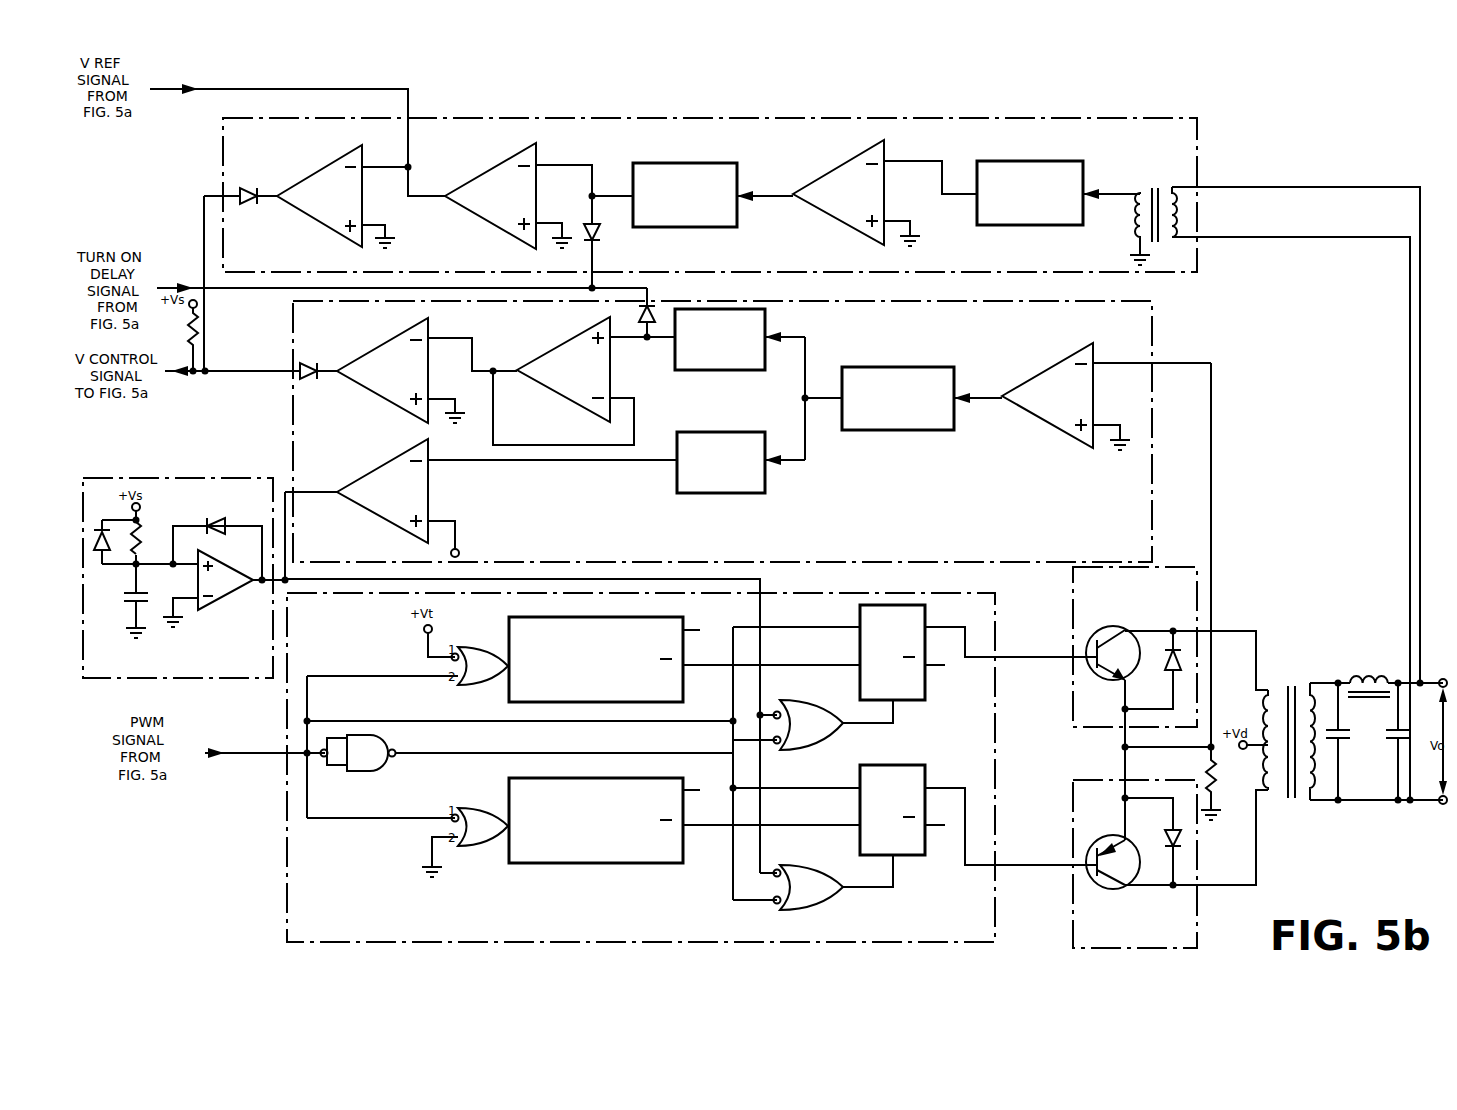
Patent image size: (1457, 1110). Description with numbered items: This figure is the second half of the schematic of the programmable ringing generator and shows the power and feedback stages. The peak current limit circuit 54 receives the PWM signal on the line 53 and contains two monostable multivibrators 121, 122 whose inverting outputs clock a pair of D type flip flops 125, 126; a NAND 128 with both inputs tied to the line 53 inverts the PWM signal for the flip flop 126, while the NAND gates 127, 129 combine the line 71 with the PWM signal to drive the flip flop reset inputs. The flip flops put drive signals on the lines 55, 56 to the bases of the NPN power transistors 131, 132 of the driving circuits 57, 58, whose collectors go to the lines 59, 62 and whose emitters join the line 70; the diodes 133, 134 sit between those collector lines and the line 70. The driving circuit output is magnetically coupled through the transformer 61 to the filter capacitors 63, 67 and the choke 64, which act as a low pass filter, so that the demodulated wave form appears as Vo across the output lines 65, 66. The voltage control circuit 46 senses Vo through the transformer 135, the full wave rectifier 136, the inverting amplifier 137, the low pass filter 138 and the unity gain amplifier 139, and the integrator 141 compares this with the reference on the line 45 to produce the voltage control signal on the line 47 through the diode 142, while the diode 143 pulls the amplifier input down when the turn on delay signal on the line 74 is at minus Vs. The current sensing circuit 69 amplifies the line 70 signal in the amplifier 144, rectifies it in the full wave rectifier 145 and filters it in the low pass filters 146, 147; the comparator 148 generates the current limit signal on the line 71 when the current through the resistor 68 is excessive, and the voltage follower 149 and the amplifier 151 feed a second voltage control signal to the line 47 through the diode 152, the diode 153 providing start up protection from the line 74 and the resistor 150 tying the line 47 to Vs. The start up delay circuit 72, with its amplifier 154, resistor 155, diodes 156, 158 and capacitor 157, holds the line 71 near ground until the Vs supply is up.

The line 45 is at (285, 89).
The voltage control circuit 46 is at (748, 118).
The line 47 is at (222, 375).
The line 53 is at (210, 756).
The peak current limit circuit 54 is at (285, 870).
The line 55 is at (1048, 657).
The line 56 is at (1035, 870).
The driving circuit 57 is at (1072, 614).
The driving circuit 58 is at (1072, 936).
The line 59 is at (1238, 631).
The transformer 61 is at (1298, 680).
The line 62 is at (1240, 886).
The filter capacitor 63 is at (1343, 740).
The choke 64 is at (1362, 678).
The output line 65 is at (1330, 187).
The output line 66 is at (1318, 237).
The filter capacitor 67 is at (1395, 742).
The resistor 68 is at (1225, 800).
The current sensing circuit 69 is at (1156, 334).
The line 70 is at (1213, 492).
The line 71 is at (748, 578).
The start up delay circuit 72 is at (183, 478).
The line 74 is at (212, 300).
The monostable multivibrator 121 is at (523, 625).
The monostable multivibrator 122 is at (535, 783).
The D type flip flop 125 is at (893, 612).
The D type flip flop 126 is at (900, 770).
The NAND gate 127 is at (832, 725).
The NAND 128 is at (527, 747).
The NAND 129 is at (832, 882).
The NPN transistor 131 is at (1100, 674).
The NPN transistor 132 is at (1097, 850).
The diode 133 is at (1180, 648).
The diode 134 is at (1182, 850).
The transformer 135 is at (1157, 188).
The full wave rectifier 136 is at (1000, 165).
The inverting amplifier 137 is at (843, 170).
The low pass filter 138 is at (675, 165).
The amplifier 139 is at (497, 172).
The integrator 141 is at (328, 172).
The diode 142 is at (238, 190).
The diode 143 is at (600, 228).
The amplifier 144 is at (1055, 375).
The full wave rectifier 145 is at (935, 372).
The low pass filter 146 is at (760, 325).
The low pass filter 147 is at (700, 435).
The comparator 148 is at (390, 463).
The amplifier 149 is at (570, 340).
The resistor 150 is at (208, 350).
The amplifier 151 is at (385, 343).
The diode 152 is at (300, 365).
The diode 153 is at (655, 300).
The amplifier 154 is at (224, 588).
The resistor 155 is at (143, 530).
The diode 156 is at (100, 528).
The capacitor 157 is at (130, 600).
The diode 158 is at (210, 520).